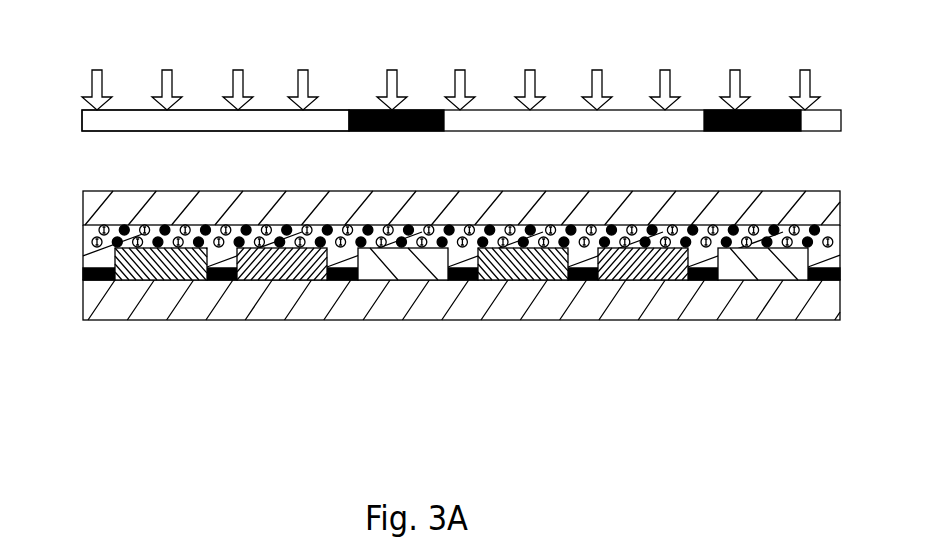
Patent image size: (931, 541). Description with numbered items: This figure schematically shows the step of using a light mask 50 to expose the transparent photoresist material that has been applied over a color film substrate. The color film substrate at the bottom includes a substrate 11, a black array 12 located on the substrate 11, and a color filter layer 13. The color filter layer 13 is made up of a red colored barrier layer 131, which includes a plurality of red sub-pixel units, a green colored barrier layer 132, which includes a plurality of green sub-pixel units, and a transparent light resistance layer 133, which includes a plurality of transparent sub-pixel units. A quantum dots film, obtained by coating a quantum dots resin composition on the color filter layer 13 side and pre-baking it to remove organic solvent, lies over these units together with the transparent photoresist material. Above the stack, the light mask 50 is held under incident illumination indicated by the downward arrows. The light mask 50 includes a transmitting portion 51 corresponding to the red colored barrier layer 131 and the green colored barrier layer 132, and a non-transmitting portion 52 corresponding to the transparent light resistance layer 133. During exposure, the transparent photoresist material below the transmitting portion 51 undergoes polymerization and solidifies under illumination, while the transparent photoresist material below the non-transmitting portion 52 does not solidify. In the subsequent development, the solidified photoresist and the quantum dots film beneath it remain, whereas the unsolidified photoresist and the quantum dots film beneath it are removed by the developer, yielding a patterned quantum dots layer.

The light mask 50 is at (82, 119).
The transmitting portion 51 is at (157, 120).
The non-transmitting portion 52 is at (362, 110).
The substrate 11 is at (98, 303).
The black array 12 is at (580, 280).
The color filter layer 13 is at (461, 333).
The red colored barrier layer 131 is at (160, 280).
The green colored barrier layer 132 is at (282, 280).
The transparent light resistance layer 133 is at (583, 313).